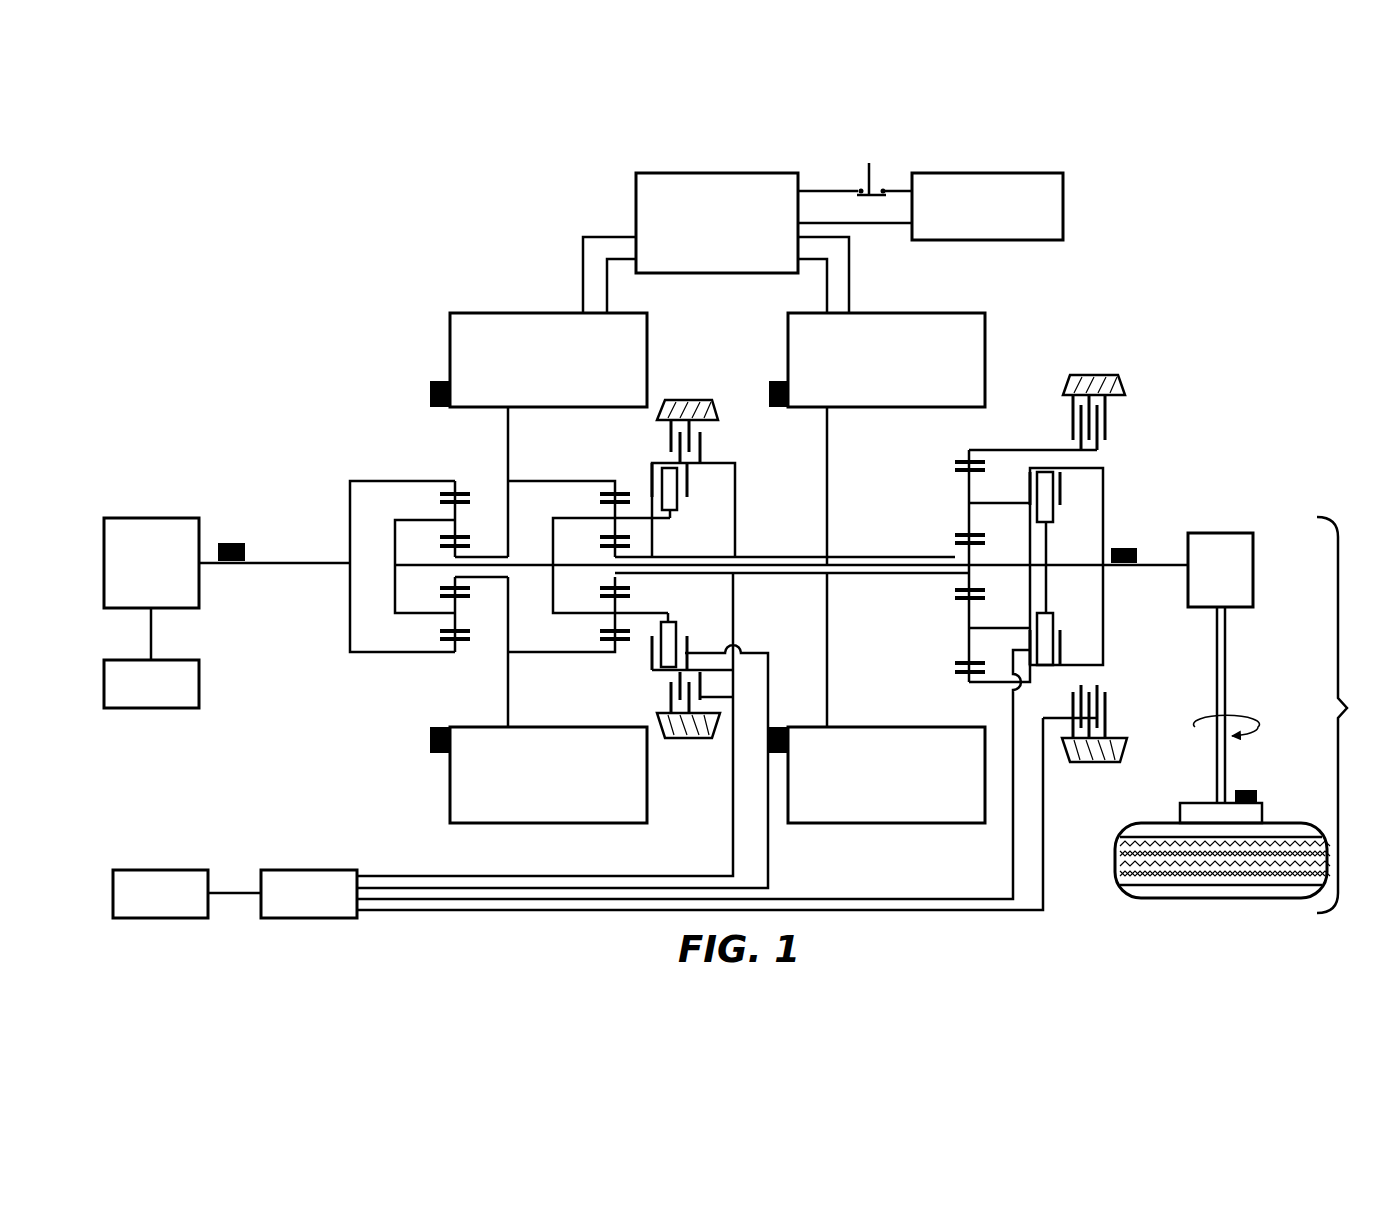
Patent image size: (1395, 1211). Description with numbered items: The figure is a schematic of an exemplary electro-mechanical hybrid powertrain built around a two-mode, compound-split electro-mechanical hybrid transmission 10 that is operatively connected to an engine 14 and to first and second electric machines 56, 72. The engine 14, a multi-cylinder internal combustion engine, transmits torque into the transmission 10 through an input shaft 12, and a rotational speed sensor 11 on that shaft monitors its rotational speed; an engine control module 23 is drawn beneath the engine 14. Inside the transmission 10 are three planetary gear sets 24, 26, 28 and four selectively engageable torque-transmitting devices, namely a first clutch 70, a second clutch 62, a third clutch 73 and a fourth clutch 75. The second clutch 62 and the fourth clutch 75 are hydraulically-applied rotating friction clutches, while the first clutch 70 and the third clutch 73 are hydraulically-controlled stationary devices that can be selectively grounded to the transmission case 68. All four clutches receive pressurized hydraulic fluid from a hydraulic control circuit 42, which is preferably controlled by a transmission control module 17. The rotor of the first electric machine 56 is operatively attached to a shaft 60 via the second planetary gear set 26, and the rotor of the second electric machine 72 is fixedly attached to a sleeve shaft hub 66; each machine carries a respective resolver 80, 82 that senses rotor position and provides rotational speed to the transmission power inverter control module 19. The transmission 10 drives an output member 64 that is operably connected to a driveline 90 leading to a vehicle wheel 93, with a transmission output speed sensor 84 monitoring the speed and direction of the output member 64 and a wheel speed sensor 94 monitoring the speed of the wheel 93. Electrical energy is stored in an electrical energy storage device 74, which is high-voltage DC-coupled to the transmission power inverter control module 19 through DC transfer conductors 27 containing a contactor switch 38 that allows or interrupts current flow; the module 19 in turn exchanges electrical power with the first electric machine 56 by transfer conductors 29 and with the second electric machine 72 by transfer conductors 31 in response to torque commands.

The electro-mechanical hybrid transmission 10 is at (410, 275).
The rotational speed sensor 11 is at (231, 543).
The input shaft 12 is at (308, 562).
The engine 14 is at (157, 518).
The transmission control module 17 is at (153, 870).
The transmission power inverter control module 19 is at (636, 191).
The engine control module 23 is at (197, 701).
The first planetary gear set 24 is at (447, 478).
The second planetary gear set 26 is at (612, 478).
The DC transfer conductors 27 is at (815, 188).
The third planetary gear set 28 is at (962, 450).
The transfer conductors 29 is at (583, 272).
The transfer conductors 31 is at (852, 267).
The contactor switch 38 is at (874, 175).
The hydraulic control circuit 42 is at (278, 870).
The first electric machine 56 is at (450, 345).
The shaft 60 is at (1020, 564).
The clutch C2 62 is at (1062, 510).
The output member 64 is at (1160, 563).
The sleeve shaft hub 66 is at (863, 557).
The transmission case 68 is at (690, 400).
The clutch C1 70 is at (1060, 412).
The second electric machine 72 is at (985, 328).
The clutch C3 73 is at (710, 447).
The electrical energy storage device 74 is at (1065, 195).
The clutch C4 75 is at (690, 494).
The resolver 80 is at (430, 393).
The resolver 82 is at (778, 381).
The transmission output speed sensor 84 is at (1125, 548).
The driveline 90 is at (1353, 708).
The vehicle wheel 93 is at (1180, 812).
The wheel speed sensor 94 is at (1250, 790).